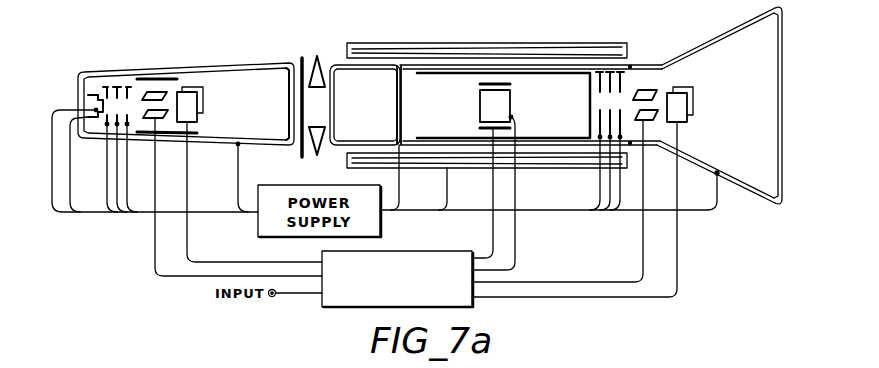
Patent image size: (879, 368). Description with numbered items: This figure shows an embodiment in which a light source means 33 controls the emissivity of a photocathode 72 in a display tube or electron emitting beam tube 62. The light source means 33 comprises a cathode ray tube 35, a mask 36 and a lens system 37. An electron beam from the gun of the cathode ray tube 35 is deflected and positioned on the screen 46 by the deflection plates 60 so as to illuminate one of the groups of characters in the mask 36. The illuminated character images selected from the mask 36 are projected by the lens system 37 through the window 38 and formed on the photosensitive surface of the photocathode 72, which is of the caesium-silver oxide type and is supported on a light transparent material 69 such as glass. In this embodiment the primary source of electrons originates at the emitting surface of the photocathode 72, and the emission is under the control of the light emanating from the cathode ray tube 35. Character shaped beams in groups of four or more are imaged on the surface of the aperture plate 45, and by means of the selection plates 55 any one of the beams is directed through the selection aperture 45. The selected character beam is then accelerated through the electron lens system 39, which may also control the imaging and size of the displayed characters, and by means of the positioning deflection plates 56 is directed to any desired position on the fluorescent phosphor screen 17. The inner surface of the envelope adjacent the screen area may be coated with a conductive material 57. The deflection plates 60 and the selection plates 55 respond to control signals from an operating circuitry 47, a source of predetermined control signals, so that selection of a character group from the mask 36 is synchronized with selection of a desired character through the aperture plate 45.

The screen 17 is at (779, 78).
The light source means 33 is at (224, 175).
The cathode ray tube 35 is at (98, 68).
The mask 36 is at (297, 63).
The lens system 37 is at (320, 58).
The window 38 is at (333, 98).
The electron lens system 39 is at (627, 86).
The aperture plate 45 is at (590, 108).
The screen 46 is at (288, 147).
The operating circuitry 47 is at (445, 250).
The selection plates 55 is at (510, 108).
The positioning deflection plates 56 is at (665, 90).
The conductive material 57 is at (752, 183).
The deflection plates 60 is at (172, 90).
The electron emitting beam tube 62 is at (559, 196).
The light transparent material 69 is at (397, 130).
The photocathode 72 is at (404, 110).